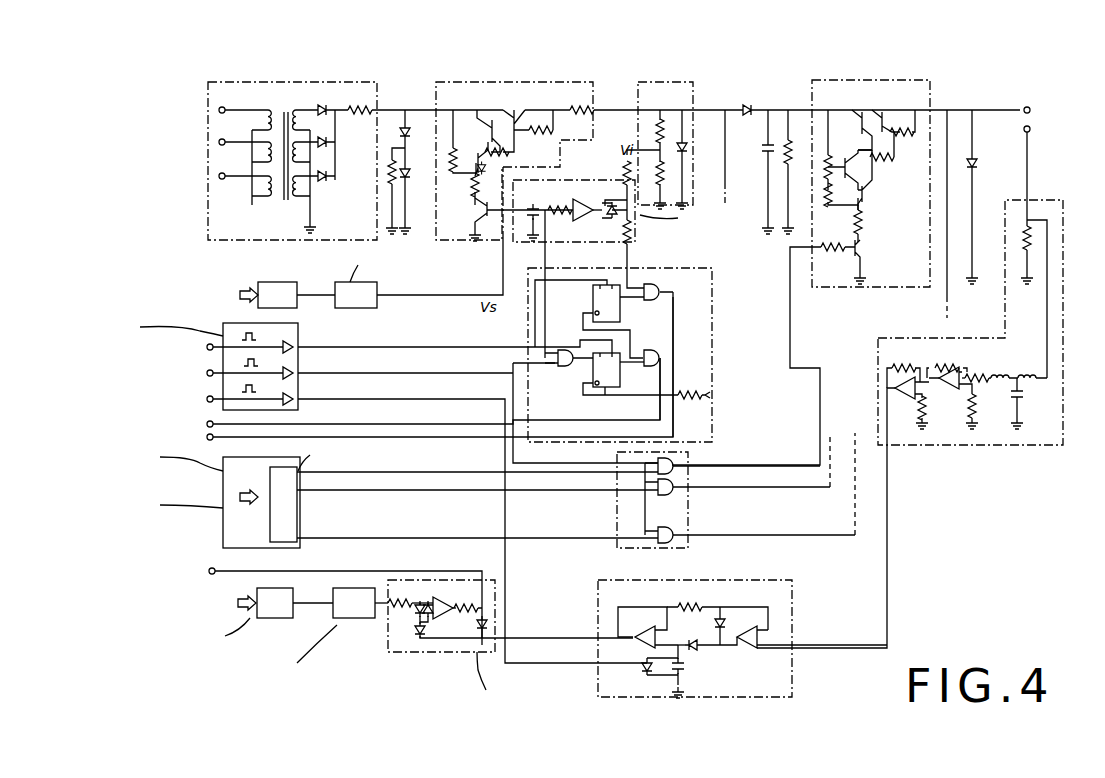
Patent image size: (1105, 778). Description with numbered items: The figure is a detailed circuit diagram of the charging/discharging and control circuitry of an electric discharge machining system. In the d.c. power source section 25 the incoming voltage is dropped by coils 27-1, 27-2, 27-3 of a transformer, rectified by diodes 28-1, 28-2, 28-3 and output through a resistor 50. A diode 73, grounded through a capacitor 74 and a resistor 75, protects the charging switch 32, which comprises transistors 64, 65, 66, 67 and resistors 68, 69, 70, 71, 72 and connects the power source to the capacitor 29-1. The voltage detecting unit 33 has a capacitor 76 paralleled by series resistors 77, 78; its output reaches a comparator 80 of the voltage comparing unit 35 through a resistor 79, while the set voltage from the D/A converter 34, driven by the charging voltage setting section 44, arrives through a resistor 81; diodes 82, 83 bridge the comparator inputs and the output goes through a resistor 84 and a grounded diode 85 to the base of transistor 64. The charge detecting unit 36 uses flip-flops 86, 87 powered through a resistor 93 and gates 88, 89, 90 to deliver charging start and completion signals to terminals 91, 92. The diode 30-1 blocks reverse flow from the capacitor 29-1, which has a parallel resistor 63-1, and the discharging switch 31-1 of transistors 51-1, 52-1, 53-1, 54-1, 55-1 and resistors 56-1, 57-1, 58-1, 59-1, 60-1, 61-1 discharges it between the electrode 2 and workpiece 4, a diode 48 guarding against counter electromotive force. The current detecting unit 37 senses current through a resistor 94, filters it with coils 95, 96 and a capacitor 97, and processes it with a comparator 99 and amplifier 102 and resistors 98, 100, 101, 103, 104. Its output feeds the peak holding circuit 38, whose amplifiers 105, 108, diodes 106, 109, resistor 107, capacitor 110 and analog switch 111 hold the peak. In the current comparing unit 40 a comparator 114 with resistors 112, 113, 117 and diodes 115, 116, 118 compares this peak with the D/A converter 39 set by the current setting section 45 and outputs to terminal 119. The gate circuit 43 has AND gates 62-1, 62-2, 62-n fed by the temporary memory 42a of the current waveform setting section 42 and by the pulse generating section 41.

The d.c. power source section 25 is at (323, 82).
The coil 27-1 is at (260, 118).
The coil 27-2 is at (260, 151).
The coil 27-3 is at (260, 184).
The diode 28-1 is at (322, 107).
The diode 28-2 is at (327, 146).
The diode 28-3 is at (324, 184).
The resistor 50 is at (359, 107).
The diode 73 is at (404, 115).
The resistor 75 is at (388, 161).
The capacitor 74 is at (407, 179).
The resistor 69 is at (450, 160).
The charging switch 32 is at (462, 82).
The transistor 65 is at (476, 153).
The transistor 66 is at (491, 125).
The transistor 67 is at (514, 113).
The resistor 68 is at (473, 187).
The transistor 64 is at (482, 208).
The resistor 70 is at (507, 152).
The resistor 71 is at (541, 133).
The resistor 72 is at (581, 113).
The voltage detecting unit 33 is at (651, 82).
The resistor 77 is at (658, 130).
The resistor 78 is at (663, 171).
The capacitor 76 is at (686, 150).
The voltage comparing unit 35 is at (630, 226).
The resistor 79 is at (626, 170).
The diode 82 is at (618, 198).
The diode 85 is at (533, 207).
The resistor 84 is at (559, 206).
The comparator 80 is at (578, 218).
The diode 83 is at (602, 218).
The resistor 81 is at (631, 241).
The diode 30-1 is at (747, 105).
The capacitor 29-1 is at (764, 150).
The resistor 63-1 is at (788, 160).
The resistor 59-1 is at (825, 156).
The discharging switch 31-1 is at (832, 80).
The transistor 54-1 is at (860, 117).
The transistor 55-1 is at (884, 111).
The resistor 61-1 is at (920, 113).
The transistor 53-1 is at (843, 162).
The resistor 60-1 is at (879, 160).
The transistor 52-1 is at (866, 194).
The resistor 58-1 is at (827, 208).
The resistor 57-1 is at (862, 219).
The transistor 51-1 is at (862, 247).
The resistor 56-1 is at (832, 248).
The workpiece 4 is at (1031, 111).
The electrode 2 is at (1031, 130).
The diode 48 is at (977, 165).
The resistor 94 is at (1022, 238).
The charging voltage setting section 44 is at (297, 308).
The D/A converter 34 is at (377, 308).
The pulse generating section 41 is at (223, 325).
The terminal 92 is at (205, 424).
The terminal 91 is at (205, 437).
The charge detecting unit 36 is at (712, 353).
The gate 88 is at (566, 366).
The flip-flop 86 is at (646, 289).
The gate 89 is at (651, 300).
The flip-flop 87 is at (649, 352).
The gate 90 is at (658, 366).
The resistor 93 is at (690, 403).
The current detecting unit 37 is at (1063, 350).
The coil 95 is at (1027, 373).
The coil 96 is at (999, 373).
The capacitor 97 is at (1023, 397).
The resistor 98 is at (981, 390).
The feedback resistor 101 is at (948, 368).
The resistor 100 is at (974, 410).
The amplifier 102 is at (898, 406).
The feedback resistor 104 is at (905, 361).
The resistor 103 is at (925, 414).
The comparator 99 is at (972, 404).
The current waveform setting section 42 is at (188, 499).
The temporary memory 42a is at (270, 532).
The gate circuit 43 is at (690, 547).
The AND gate 62-1 is at (676, 467).
The AND gate 62-2 is at (676, 489).
The AND gate 62-n is at (676, 536).
The current setting section 45 is at (275, 620).
The D/A converter 39 is at (350, 620).
The terminal 119 is at (208, 572).
The current comparing unit 40 is at (456, 652).
The resistor 112 is at (405, 598).
The comparator 114 is at (444, 598).
The diode 115 is at (416, 614).
The diode 116 is at (425, 615).
The resistor 113 is at (421, 640).
The resistor 117 is at (466, 612).
The diode 118 is at (492, 617).
The peak holding circuit 38 is at (737, 700).
The amplifier 108 is at (663, 631).
The resistor 107 is at (690, 605).
The diode 106 is at (723, 618).
The amplifier 105 is at (756, 656).
The diode 109 is at (694, 650).
The capacitor 110 is at (682, 680).
The analog switch 111 is at (644, 672).